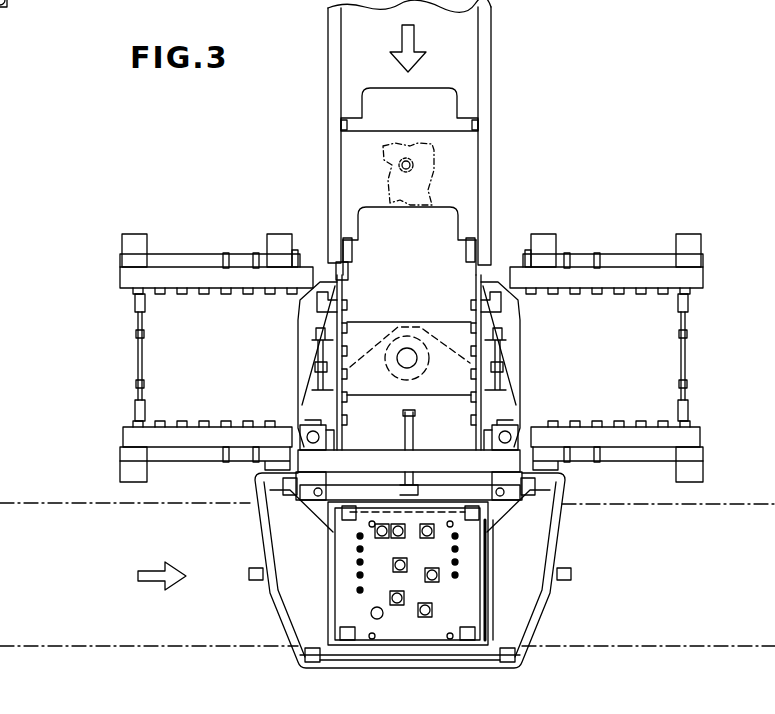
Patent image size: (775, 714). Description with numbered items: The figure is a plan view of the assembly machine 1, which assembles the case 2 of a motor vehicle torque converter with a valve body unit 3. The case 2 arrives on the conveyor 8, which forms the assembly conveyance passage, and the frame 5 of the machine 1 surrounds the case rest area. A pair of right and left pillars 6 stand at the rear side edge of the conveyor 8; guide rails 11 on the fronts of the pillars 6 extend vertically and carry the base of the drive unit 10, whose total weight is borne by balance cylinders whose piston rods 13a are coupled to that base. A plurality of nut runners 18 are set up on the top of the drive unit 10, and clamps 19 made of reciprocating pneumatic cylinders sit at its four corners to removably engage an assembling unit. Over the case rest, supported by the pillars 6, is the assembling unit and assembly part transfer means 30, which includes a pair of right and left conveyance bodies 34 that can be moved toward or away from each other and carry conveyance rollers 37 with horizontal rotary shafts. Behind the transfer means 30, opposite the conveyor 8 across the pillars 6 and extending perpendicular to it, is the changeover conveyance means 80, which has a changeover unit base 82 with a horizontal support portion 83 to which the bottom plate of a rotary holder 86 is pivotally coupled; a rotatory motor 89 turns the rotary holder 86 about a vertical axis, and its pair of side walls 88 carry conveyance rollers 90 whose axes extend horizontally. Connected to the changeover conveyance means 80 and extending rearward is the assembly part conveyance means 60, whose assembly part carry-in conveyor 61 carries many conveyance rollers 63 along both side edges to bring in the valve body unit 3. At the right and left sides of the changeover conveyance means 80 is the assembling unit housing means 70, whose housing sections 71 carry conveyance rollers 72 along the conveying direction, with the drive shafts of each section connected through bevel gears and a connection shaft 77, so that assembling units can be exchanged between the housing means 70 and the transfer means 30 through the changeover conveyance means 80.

The assembly machine 1 is at (531, 196).
The torque converter case 2 is at (371, 612).
The valve body unit 3 is at (436, 176).
The frame 5 is at (238, 471).
The pillars 6 is at (300, 490).
The conveyor 8 is at (150, 622).
The drive unit 10 is at (376, 648).
The guide rails 11 is at (512, 501).
The piston rods 13a is at (553, 478).
The nut runners 18 is at (425, 600).
The clamps 19 is at (494, 638).
The assembling unit and assembly part transfer means 30 is at (313, 612).
The conveyance bodies 34 is at (494, 594).
The conveyance rollers 37 is at (491, 553).
The assembly part conveyance means 60 is at (504, 106).
The assembly part carry-in conveyor 61 is at (354, 61).
The conveyance rollers 63 is at (352, 252).
The assembling unit housing means 70 is at (151, 219).
The housing sections 71 is at (258, 376).
The conveyance rollers 72 is at (240, 296).
The connection shaft 77 is at (144, 360).
The changeover conveyance means 80 is at (379, 302).
The changeover unit base 82 is at (503, 424).
The horizontal support portion 83 is at (400, 327).
The rotary holder 86 is at (451, 336).
The side walls 88 is at (318, 320).
The rotatory motor 89 is at (426, 340).
The conveyance rollers 90 is at (346, 288).